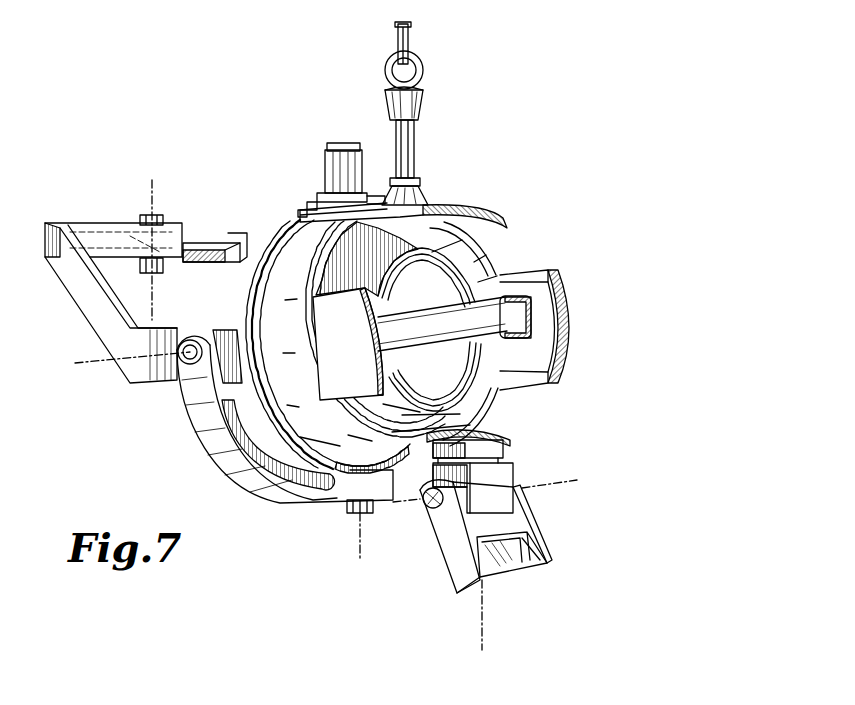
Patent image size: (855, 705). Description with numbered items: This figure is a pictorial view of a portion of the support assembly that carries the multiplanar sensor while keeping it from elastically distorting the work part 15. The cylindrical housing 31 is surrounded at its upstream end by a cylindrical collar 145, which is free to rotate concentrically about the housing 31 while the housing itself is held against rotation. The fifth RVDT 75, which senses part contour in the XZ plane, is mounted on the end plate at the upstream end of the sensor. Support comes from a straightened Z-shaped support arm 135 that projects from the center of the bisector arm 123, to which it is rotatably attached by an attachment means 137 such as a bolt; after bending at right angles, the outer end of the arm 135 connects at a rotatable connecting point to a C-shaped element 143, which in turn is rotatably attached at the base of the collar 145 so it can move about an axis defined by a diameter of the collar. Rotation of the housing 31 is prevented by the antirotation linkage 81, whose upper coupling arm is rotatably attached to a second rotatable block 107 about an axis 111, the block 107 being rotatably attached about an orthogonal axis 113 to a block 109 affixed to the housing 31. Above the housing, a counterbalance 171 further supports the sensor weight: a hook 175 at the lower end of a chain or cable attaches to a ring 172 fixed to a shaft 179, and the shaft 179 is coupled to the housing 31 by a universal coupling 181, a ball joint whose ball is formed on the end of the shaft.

The work part 15 is at (515, 342).
The cylindrical housing 31 is at (540, 270).
The fifth RVDT 75 is at (325, 162).
The antirotation linkage 81 is at (562, 516).
The second rotatable block 107 is at (500, 477).
The block 109 is at (505, 446).
The axis 111 is at (577, 482).
The axis 113 is at (483, 630).
The bisector arm 123 is at (230, 219).
The Z-shaped support arm 135 is at (98, 332).
The attachment means 137 is at (163, 216).
The C-shaped element 143 is at (383, 499).
The cylindrical collar 145 is at (277, 217).
The counterbalance 171 is at (471, 91).
The ring 172 is at (423, 60).
The hook 175 is at (410, 23).
The shaft 179 is at (415, 147).
The universal coupling 181 is at (422, 185).